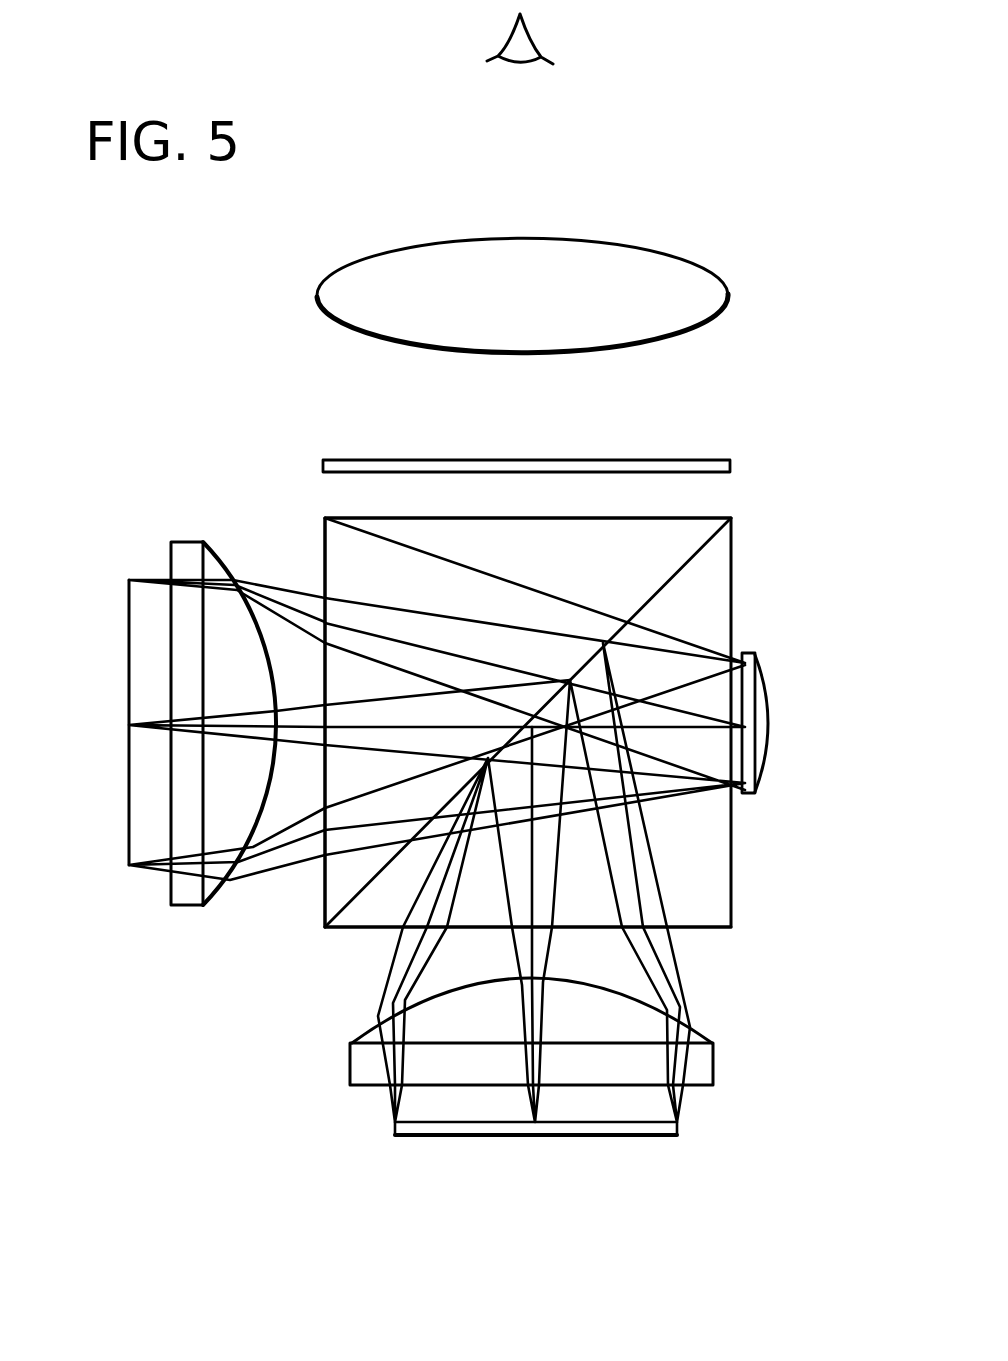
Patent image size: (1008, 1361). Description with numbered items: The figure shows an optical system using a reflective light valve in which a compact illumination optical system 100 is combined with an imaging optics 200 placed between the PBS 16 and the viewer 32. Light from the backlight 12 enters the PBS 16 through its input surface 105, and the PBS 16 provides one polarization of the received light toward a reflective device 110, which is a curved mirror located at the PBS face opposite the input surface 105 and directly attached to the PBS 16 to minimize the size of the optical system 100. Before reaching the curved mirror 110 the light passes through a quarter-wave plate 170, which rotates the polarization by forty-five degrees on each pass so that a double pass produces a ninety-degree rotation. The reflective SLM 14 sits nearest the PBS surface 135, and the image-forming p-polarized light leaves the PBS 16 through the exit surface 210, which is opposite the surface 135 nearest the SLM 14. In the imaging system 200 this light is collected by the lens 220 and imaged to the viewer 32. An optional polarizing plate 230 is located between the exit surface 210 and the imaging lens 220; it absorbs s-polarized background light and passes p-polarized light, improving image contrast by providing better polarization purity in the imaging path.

The viewer 32 is at (528, 33).
The lens 220 is at (710, 301).
The imaging optics 200 is at (226, 427).
The polarizing plate 230 is at (730, 464).
The exit surface 210 is at (683, 518).
The input surface 105 is at (320, 557).
The PBS 16 is at (764, 898).
The PBS surface 135 is at (703, 927).
The backlight 12 is at (129, 818).
The illumination optical system 100 is at (190, 979).
The quarter-wave plate 170 is at (748, 795).
The reflective device 110 is at (768, 745).
The SLM 14 is at (608, 1135).